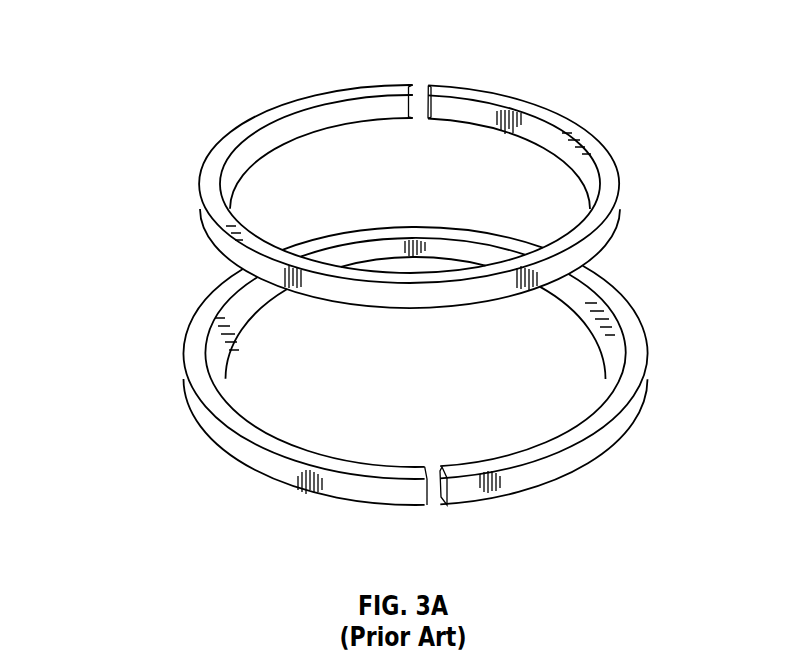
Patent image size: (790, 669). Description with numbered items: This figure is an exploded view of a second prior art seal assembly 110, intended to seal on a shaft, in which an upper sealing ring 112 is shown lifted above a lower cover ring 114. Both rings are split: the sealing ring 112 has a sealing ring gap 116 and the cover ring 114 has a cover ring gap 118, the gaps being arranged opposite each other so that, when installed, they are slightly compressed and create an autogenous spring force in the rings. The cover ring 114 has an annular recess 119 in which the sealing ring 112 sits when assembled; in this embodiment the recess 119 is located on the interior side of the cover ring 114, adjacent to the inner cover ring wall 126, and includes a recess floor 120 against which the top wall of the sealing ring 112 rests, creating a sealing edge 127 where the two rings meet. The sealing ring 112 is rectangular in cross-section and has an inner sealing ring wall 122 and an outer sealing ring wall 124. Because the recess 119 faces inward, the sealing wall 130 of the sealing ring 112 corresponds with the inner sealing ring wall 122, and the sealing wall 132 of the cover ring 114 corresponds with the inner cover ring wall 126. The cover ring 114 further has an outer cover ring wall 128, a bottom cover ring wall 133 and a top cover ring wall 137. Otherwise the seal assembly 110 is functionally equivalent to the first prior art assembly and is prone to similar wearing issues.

The seal assembly 110 is at (147, 46).
The sealing ring 112 is at (606, 163).
The cover ring 114 is at (238, 455).
The sealing ring gap 116 is at (428, 88).
The cover ring gap 118 is at (438, 494).
The annular recess 119 is at (236, 318).
The recess floor 120 is at (227, 385).
The inner sealing ring wall 122 is at (497, 120).
The outer sealing ring wall 124 is at (598, 247).
The inner cover ring wall 126 is at (543, 307).
The sealing edge 127 is at (263, 318).
The outer cover ring wall 128 is at (535, 480).
The sealing wall 130 is at (575, 152).
The sealing wall 132 is at (598, 396).
The bottom cover ring wall 133 is at (192, 362).
The top cover ring wall 137 is at (282, 488).